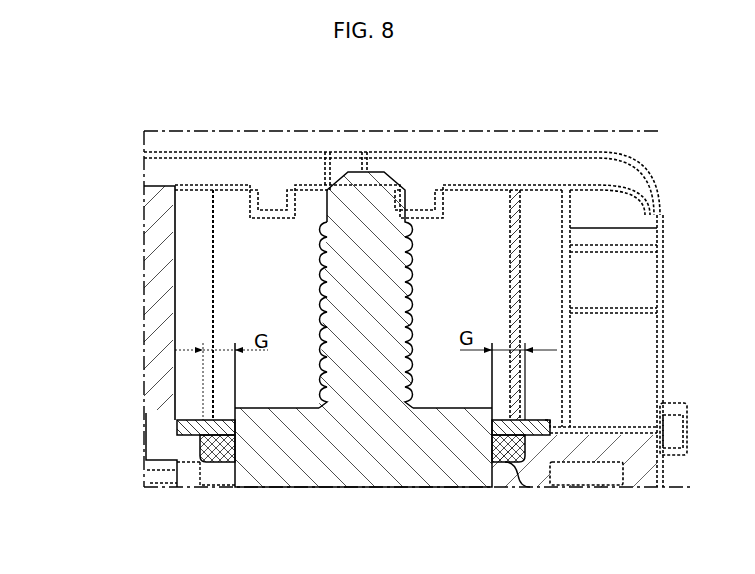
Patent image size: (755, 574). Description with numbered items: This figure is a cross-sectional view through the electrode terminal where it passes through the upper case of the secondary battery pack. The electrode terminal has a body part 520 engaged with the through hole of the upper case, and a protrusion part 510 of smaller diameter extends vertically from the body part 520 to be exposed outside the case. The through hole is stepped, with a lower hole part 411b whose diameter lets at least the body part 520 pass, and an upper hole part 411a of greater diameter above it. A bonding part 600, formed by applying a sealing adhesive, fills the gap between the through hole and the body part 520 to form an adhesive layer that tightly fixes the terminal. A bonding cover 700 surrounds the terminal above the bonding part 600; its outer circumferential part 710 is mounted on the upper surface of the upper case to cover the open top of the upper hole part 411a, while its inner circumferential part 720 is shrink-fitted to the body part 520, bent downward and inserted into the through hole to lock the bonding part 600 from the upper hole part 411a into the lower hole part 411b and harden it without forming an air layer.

The protrusion part 510 is at (366, 200).
The body part 520 is at (452, 408).
The bonding part 600 is at (210, 463).
The bonding cover 700 is at (126, 434).
The outer circumferential part 710 is at (180, 428).
The inner circumferential part 720 is at (200, 438).
The upper hole part 411a is at (522, 452).
The lower hole part 411b is at (500, 470).